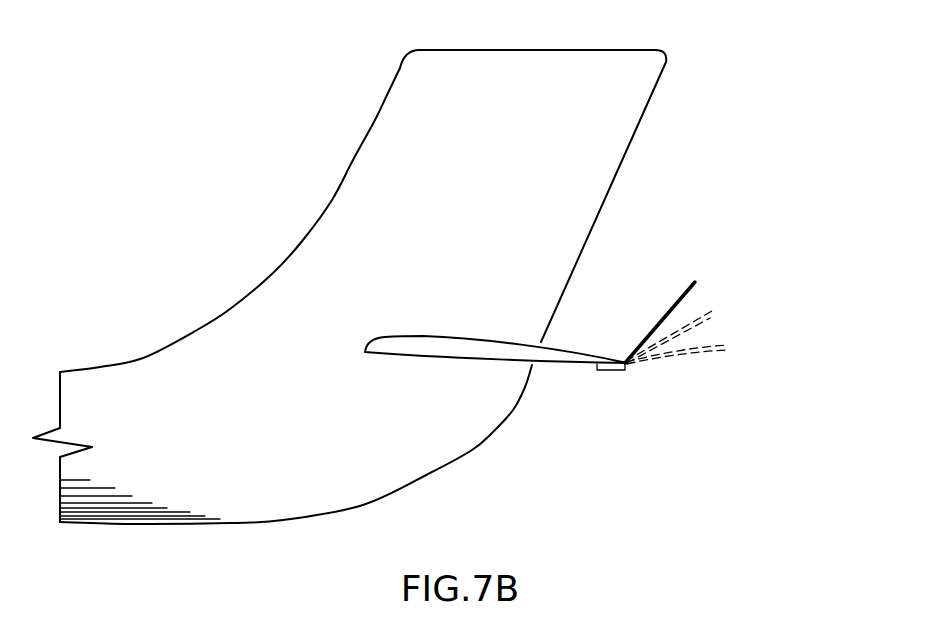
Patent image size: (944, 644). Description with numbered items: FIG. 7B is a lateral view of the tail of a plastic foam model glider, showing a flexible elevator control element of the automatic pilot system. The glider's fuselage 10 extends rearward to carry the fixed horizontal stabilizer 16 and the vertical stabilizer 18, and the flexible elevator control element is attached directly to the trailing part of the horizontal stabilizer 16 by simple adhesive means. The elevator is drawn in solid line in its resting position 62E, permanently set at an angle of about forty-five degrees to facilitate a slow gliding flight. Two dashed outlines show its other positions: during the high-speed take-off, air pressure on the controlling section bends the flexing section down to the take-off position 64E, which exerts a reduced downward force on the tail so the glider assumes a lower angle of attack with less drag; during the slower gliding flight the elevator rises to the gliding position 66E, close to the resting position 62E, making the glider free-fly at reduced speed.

The fuselage 10 is at (139, 362).
The vertical stabilizer 18 is at (633, 137).
The horizontal stabilizer 16 is at (552, 364).
The resting position 62E is at (696, 280).
The gliding position 66E is at (717, 309).
The take-off position 64E is at (732, 348).